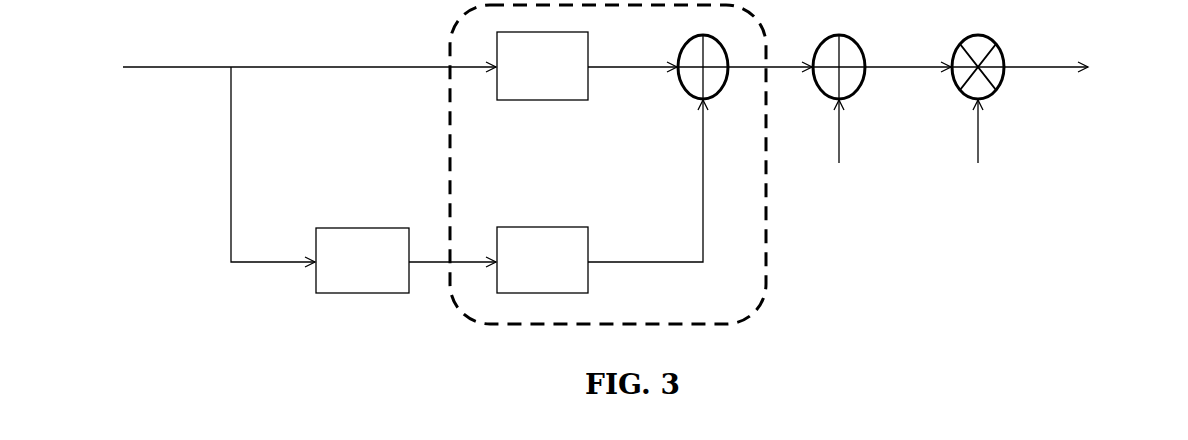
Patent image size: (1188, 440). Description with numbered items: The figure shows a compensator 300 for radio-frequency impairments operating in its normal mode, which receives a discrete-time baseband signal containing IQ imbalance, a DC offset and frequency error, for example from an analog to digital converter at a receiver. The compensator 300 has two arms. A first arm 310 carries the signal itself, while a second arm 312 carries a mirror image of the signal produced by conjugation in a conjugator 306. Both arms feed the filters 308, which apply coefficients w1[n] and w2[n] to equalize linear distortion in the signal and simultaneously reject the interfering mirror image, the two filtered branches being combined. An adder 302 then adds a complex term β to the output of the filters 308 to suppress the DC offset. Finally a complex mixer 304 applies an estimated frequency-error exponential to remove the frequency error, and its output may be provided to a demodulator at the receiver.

The compensator 300 is at (614, 186).
The adder 302 is at (860, 92).
The complex mixer 304 is at (1002, 82).
The conjugator 306 is at (385, 293).
The filters 308 is at (758, 298).
The first arm 310 is at (272, 63).
The second arm 312 is at (231, 167).